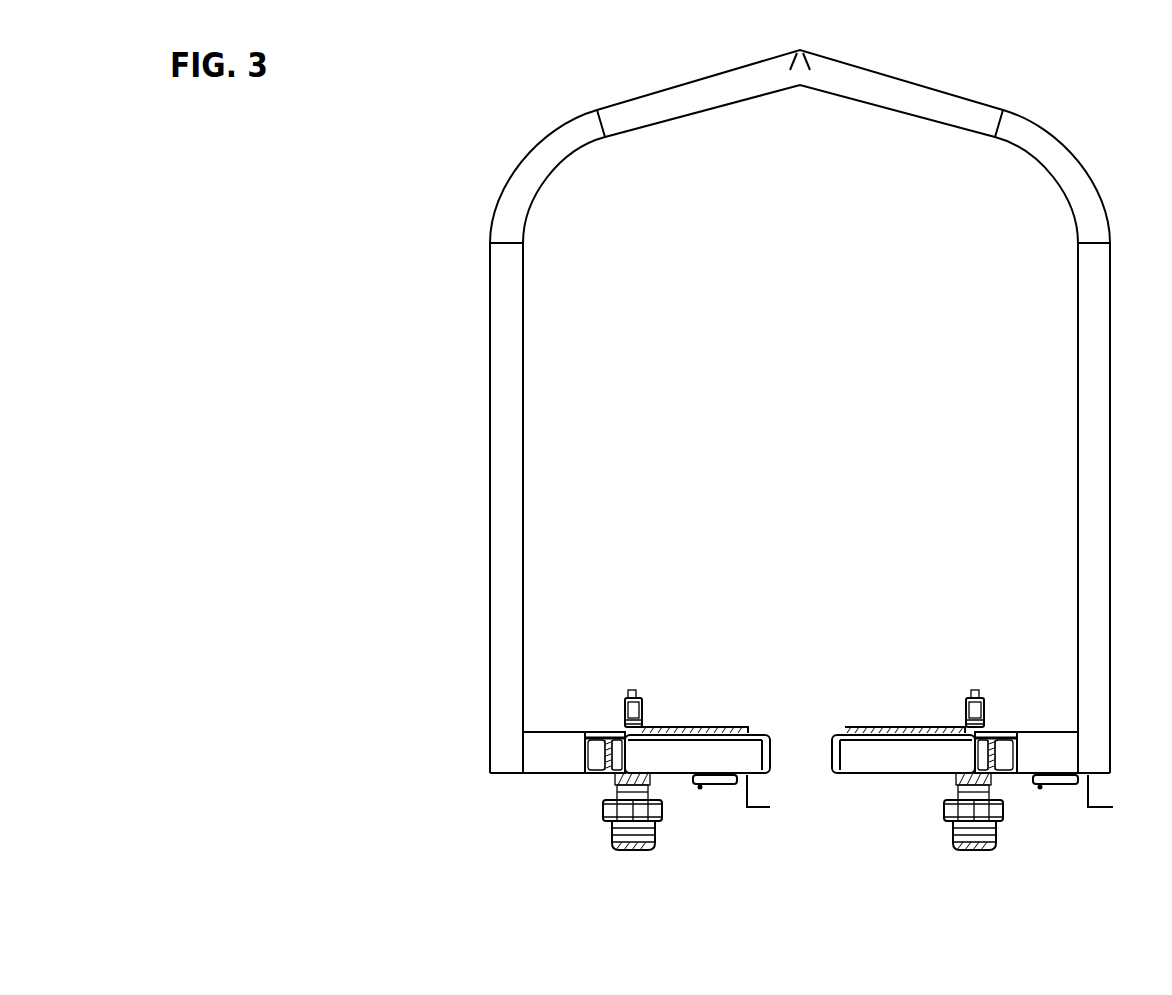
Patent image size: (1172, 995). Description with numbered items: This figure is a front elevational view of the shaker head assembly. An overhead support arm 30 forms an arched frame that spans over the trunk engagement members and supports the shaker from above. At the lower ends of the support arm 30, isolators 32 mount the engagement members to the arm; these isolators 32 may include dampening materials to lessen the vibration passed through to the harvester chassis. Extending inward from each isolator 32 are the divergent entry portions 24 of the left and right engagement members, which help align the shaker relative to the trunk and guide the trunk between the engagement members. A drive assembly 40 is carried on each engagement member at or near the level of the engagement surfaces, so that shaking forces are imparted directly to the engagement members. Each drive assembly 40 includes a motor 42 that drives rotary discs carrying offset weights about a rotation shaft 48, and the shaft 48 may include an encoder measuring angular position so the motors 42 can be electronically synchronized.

The overhead support arm 30 is at (1080, 172).
The isolator 32 is at (552, 742).
The divergent entry portion 24 is at (717, 752).
The rotation shaft 48 is at (632, 697).
The drive assembly 40 is at (685, 677).
The motor 42 is at (618, 827).